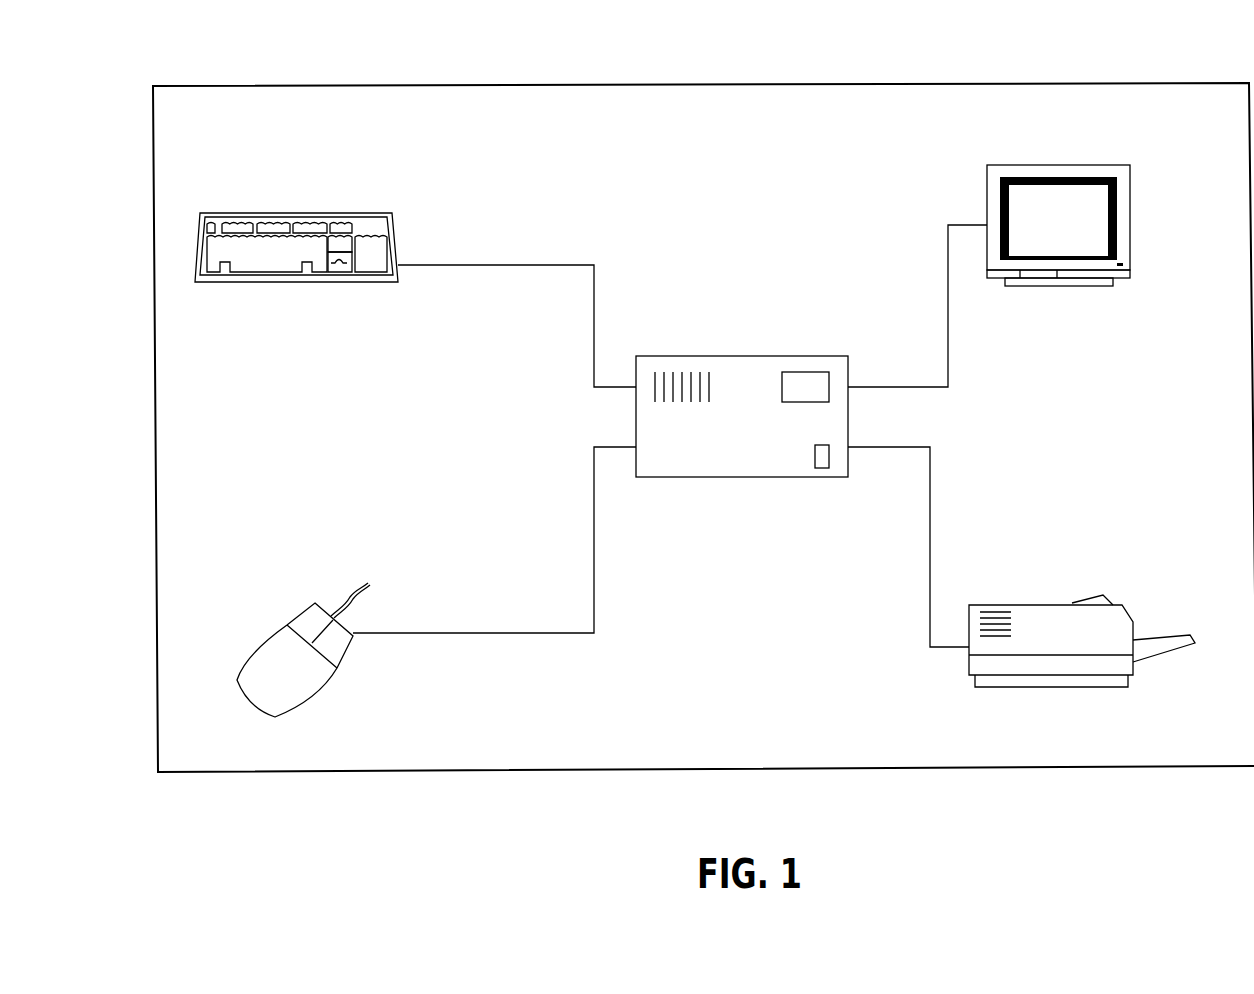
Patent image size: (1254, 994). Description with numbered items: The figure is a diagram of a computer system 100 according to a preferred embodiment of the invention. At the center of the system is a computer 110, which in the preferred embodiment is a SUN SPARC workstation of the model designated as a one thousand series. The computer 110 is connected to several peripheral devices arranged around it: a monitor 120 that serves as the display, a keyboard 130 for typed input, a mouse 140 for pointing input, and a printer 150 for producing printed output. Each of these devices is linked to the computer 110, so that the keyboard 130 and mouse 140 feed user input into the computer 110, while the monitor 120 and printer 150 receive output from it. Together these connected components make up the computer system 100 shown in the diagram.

The computer system 100 is at (702, 85).
The computer 110 is at (786, 355).
The monitor 120 is at (1130, 225).
The keyboard 130 is at (398, 248).
The mouse 140 is at (338, 665).
The printer 150 is at (1133, 620).